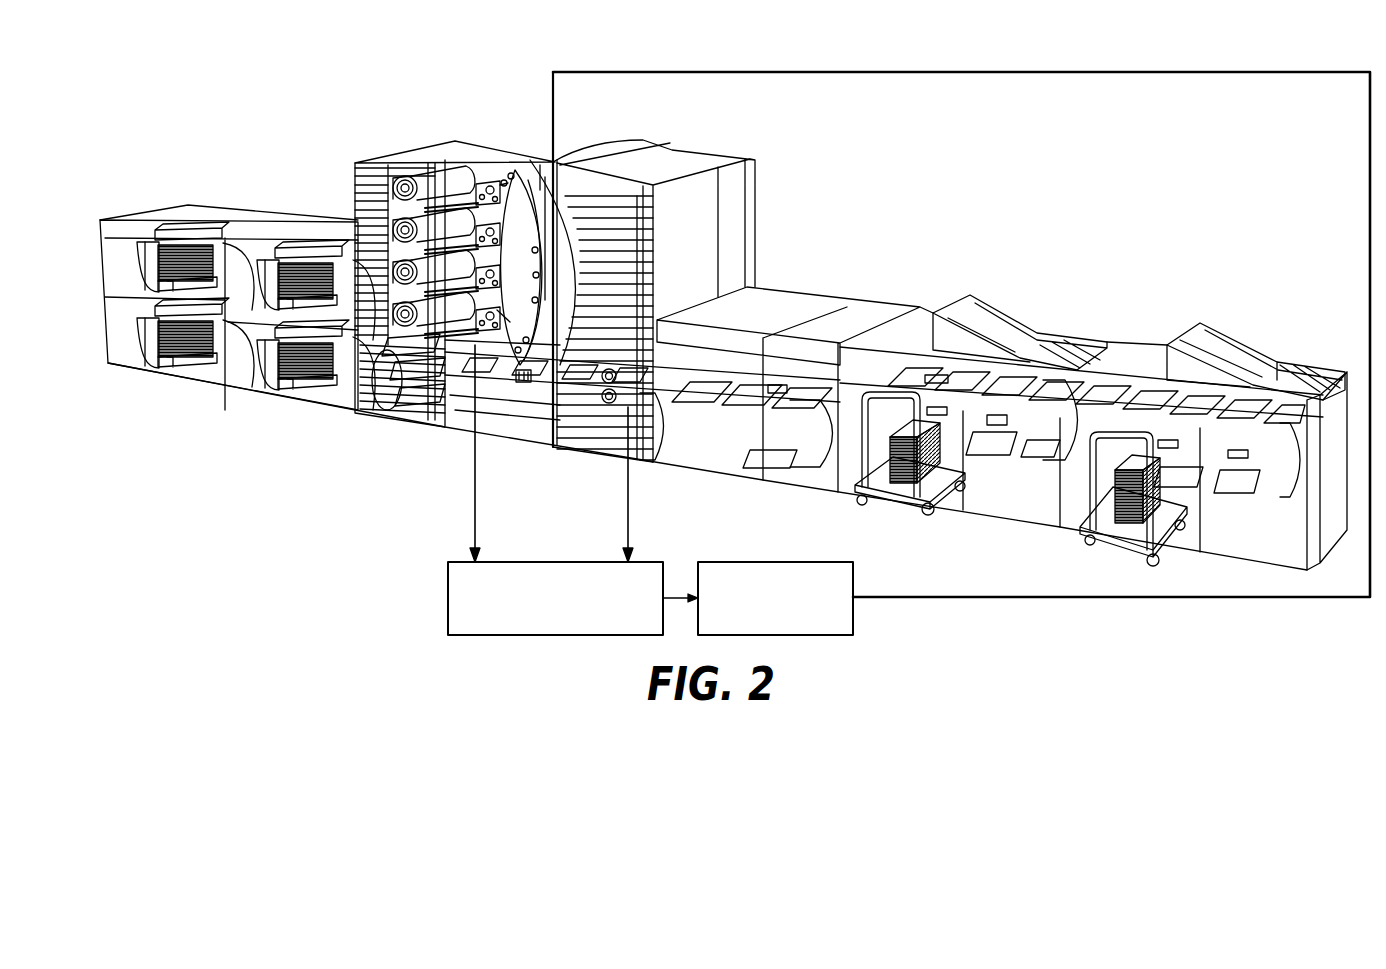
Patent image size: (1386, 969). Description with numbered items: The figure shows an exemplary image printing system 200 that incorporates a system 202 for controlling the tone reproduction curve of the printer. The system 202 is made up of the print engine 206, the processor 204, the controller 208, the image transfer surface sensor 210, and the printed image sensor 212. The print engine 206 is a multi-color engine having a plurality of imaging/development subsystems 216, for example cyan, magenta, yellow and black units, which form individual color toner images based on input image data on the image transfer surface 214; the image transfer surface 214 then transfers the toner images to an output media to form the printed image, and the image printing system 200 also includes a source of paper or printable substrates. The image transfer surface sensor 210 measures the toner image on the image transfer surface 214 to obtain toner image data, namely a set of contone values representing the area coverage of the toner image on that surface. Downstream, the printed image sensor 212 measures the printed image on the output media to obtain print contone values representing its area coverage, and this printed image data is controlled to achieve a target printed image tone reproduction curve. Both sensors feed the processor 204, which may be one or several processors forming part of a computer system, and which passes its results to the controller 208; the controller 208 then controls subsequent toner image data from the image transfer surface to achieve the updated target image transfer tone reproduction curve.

The image printing system 200 is at (306, 56).
The system for controlling a tone reproduction curve 202 is at (427, 545).
The processor 204 is at (555, 560).
The print engine 206 is at (642, 141).
The controller 208 is at (775, 560).
The image transfer surface sensor 210 is at (528, 380).
The printed image sensor 212 is at (686, 372).
The image transfer surface 214 is at (538, 190).
The imaging/development subsystems 216 is at (422, 168).